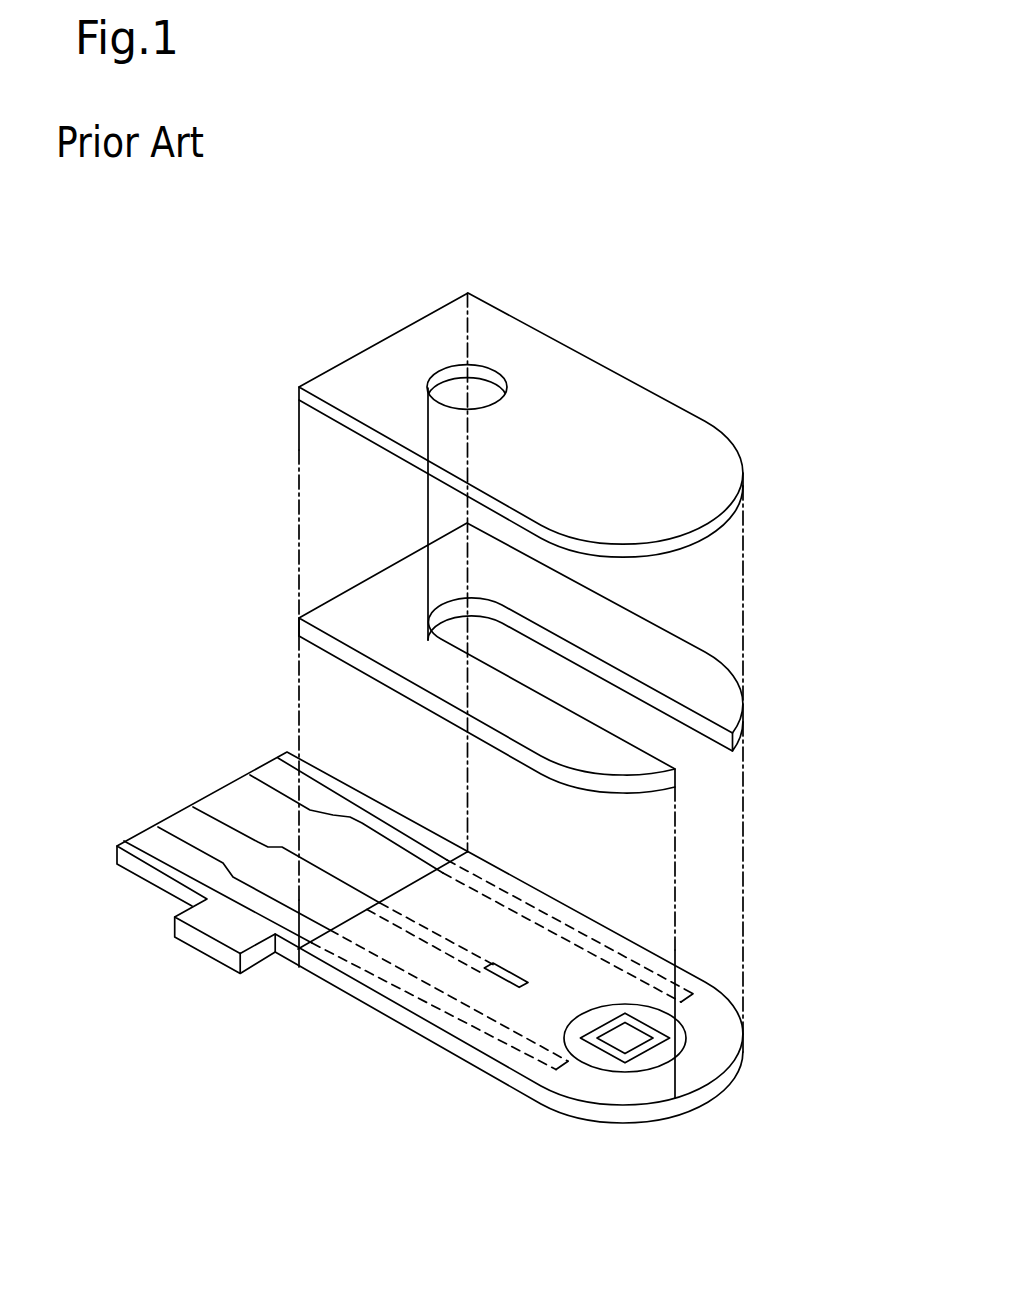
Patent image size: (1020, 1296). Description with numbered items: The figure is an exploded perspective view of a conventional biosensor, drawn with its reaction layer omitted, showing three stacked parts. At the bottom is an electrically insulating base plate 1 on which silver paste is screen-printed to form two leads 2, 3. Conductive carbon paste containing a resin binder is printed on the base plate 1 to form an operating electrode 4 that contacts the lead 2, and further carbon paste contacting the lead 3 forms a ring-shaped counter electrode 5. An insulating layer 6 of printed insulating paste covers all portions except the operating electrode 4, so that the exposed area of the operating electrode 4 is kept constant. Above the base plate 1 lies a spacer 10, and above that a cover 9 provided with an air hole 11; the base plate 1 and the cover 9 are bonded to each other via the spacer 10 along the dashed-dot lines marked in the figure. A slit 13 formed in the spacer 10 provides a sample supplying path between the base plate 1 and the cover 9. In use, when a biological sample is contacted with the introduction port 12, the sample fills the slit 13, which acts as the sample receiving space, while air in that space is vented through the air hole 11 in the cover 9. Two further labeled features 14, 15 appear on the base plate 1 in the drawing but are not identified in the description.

The electrically insulating base plate 1 is at (180, 828).
The lead 2 is at (270, 905).
The lead 3 is at (368, 825).
The operating electrode 4 is at (620, 1040).
The counter electrode 5 is at (655, 1058).
The insulating layer 6 is at (405, 957).
The cover 9 is at (341, 377).
The spacer 10 is at (368, 597).
The air hole 11 is at (455, 372).
The introduction port 12 is at (703, 764).
The slit 13 is at (615, 700).
The circuit pattern 14 is at (217, 807).
The terminal pad 15 is at (515, 982).